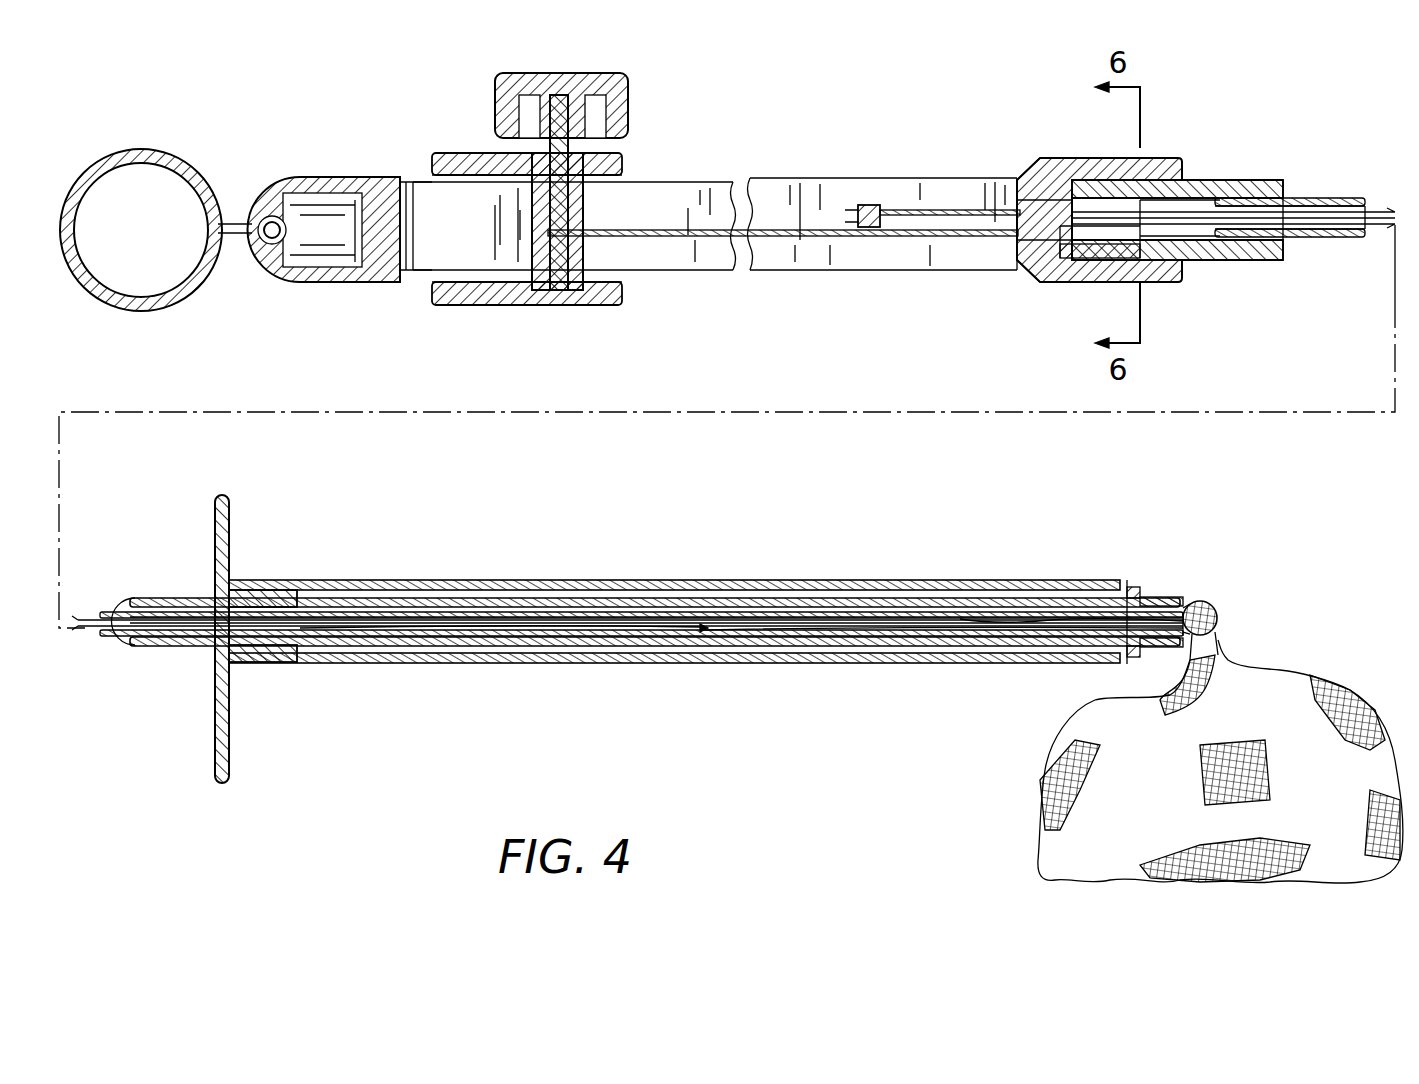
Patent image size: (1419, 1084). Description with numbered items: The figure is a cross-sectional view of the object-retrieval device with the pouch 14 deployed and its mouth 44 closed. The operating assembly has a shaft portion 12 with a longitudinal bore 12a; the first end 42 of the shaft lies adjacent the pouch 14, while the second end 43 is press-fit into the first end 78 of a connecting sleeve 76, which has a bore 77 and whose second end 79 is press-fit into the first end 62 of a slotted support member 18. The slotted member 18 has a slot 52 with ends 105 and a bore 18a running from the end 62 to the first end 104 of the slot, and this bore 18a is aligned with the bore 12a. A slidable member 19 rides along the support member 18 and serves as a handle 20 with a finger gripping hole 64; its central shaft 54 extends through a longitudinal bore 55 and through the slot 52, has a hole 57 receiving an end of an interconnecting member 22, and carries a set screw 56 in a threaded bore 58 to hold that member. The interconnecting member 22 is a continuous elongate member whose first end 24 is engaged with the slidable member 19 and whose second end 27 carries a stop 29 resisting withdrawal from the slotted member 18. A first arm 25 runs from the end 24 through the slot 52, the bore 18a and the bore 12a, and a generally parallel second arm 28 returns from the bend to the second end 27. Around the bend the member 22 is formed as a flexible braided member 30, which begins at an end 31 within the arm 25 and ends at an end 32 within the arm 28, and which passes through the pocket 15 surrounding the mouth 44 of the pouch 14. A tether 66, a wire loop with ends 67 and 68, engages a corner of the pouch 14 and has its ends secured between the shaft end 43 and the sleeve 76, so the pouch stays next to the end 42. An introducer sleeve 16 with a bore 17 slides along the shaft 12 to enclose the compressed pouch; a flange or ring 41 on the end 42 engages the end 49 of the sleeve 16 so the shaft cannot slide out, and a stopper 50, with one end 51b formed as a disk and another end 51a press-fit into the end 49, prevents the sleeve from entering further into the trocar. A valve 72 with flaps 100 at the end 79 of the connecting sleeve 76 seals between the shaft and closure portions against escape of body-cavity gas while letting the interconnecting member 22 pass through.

The shaft portion 12 is at (1335, 240).
The longitudinal bore 12a is at (1018, 608).
The compressible pouch 14 is at (1046, 780).
The pocket 15 is at (1216, 618).
The introducer sleeve 16 is at (880, 665).
The longitudinal bore 17 is at (790, 648).
The slotted support member 18 is at (826, 272).
The bore 18a is at (1016, 272).
The slidable member 19 is at (625, 300).
The handle 20 is at (452, 132).
The interconnecting member 22 is at (782, 212).
The first end 24 is at (572, 292).
The first arm 25 is at (695, 238).
The second end 27 is at (858, 205).
The second arm 28 is at (900, 206).
The stop 29 is at (856, 203).
The flexible member 30 is at (1160, 597).
The end 31 is at (705, 640).
The end 32 is at (968, 612).
The ring 41 is at (1134, 587).
The first end 42 is at (1196, 600).
The second end 43 is at (1212, 180).
The mouth 44 is at (1214, 608).
The end 49 is at (248, 582).
The stopper 50 is at (210, 558).
The end 51a is at (285, 665).
The handle flange 51b is at (216, 510).
The slot 52 is at (908, 255).
The central shaft 54 is at (545, 292).
The longitudinal bore 55 is at (385, 272).
The set screw 56 is at (628, 108).
The hole 57 is at (562, 225).
The threaded bore 58 is at (470, 296).
The first end 62 is at (1176, 158).
The finger ring 64 is at (58, 235).
The tether 66 is at (1396, 221).
The tether end 67 is at (1235, 262).
The tether end 68 is at (1250, 180).
The valve 72 is at (1050, 285).
The connecting sleeve 76 is at (1282, 198).
The longitudinal bore 77 is at (1195, 280).
The first end 78 is at (1292, 200).
The second end 79 is at (1058, 165).
The flaps 100 is at (1100, 262).
The first end of slot 104 is at (996, 180).
The slot ends 105 is at (432, 172).